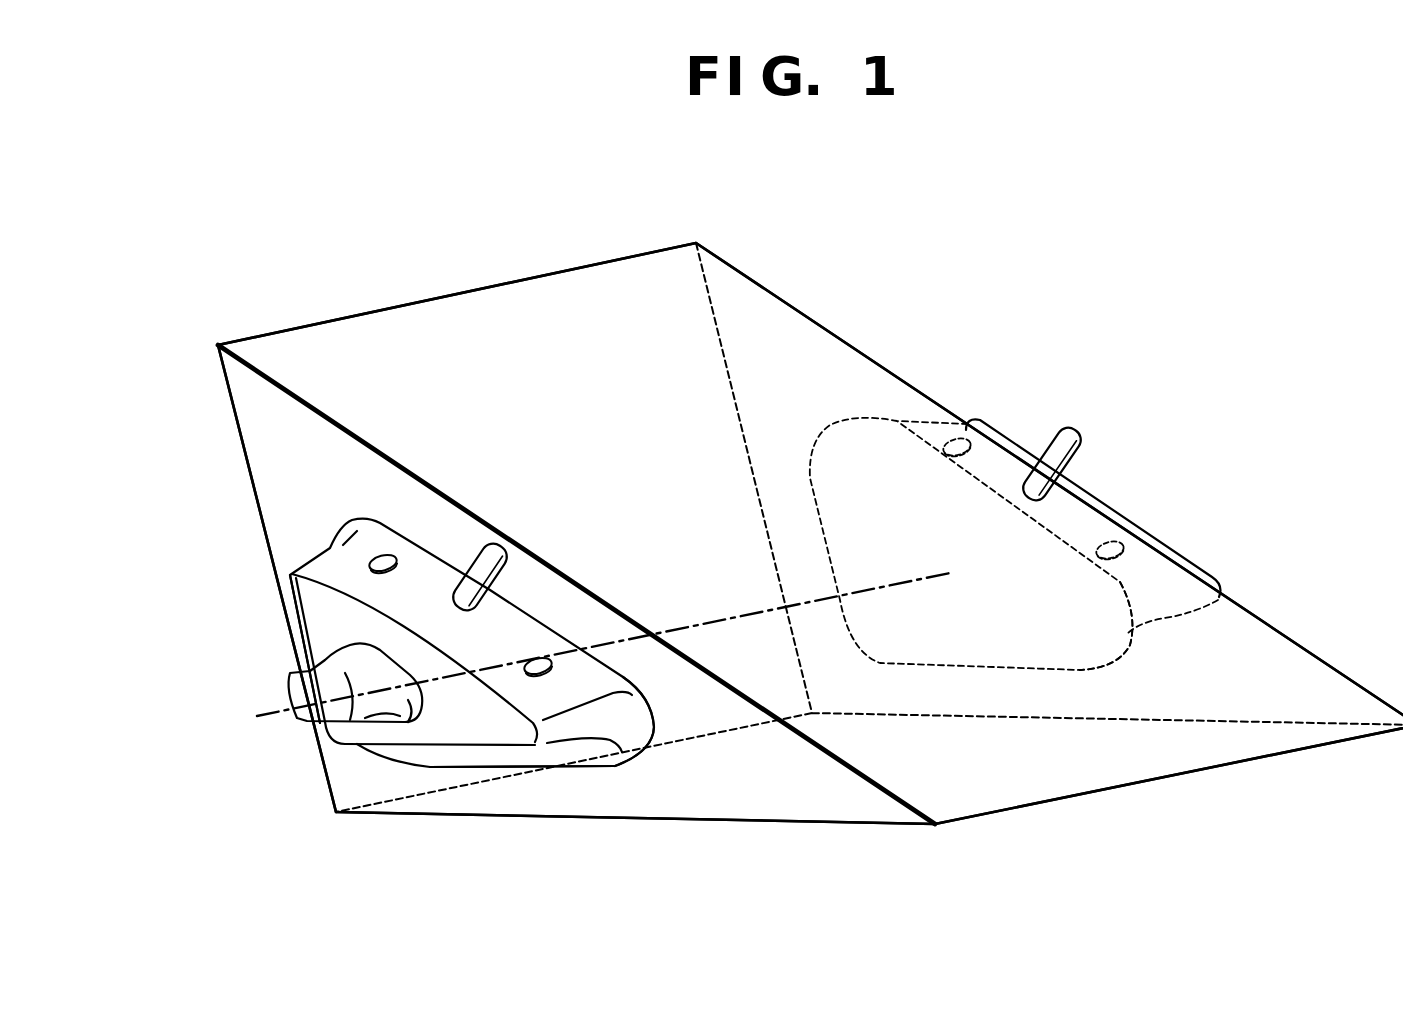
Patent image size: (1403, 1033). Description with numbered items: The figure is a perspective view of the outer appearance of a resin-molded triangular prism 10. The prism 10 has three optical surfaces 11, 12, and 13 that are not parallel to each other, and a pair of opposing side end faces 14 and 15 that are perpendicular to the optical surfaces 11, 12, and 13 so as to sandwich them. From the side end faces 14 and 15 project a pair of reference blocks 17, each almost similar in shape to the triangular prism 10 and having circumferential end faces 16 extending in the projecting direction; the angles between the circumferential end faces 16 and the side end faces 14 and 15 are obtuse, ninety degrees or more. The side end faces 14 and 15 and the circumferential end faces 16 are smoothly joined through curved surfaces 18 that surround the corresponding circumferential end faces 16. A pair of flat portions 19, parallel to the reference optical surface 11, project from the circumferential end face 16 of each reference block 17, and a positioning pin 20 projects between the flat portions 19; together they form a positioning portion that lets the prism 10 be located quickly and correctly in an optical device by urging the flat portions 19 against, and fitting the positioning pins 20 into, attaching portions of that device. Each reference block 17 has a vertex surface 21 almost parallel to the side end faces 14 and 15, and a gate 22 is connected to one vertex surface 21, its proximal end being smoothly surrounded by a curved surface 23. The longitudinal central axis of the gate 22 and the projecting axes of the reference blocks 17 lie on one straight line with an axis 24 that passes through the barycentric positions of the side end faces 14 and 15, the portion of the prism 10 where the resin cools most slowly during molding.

The triangular prism 10 is at (669, 215).
The optical surface 11 is at (773, 307).
The optical surface 12 is at (593, 803).
The optical surface 13 is at (401, 320).
The side end face 14 is at (254, 421).
The side end face 15 is at (1296, 660).
The circumferential end face 16 is at (377, 533).
The reference block 17 is at (304, 759).
The curved surface 18 is at (640, 727).
The flat portion 19 is at (390, 553).
The positioning pin 20 is at (497, 550).
The vertex surface 21 is at (465, 733).
The gate 22 is at (284, 688).
The curved surface 23 is at (404, 707).
The axis 24 is at (884, 583).